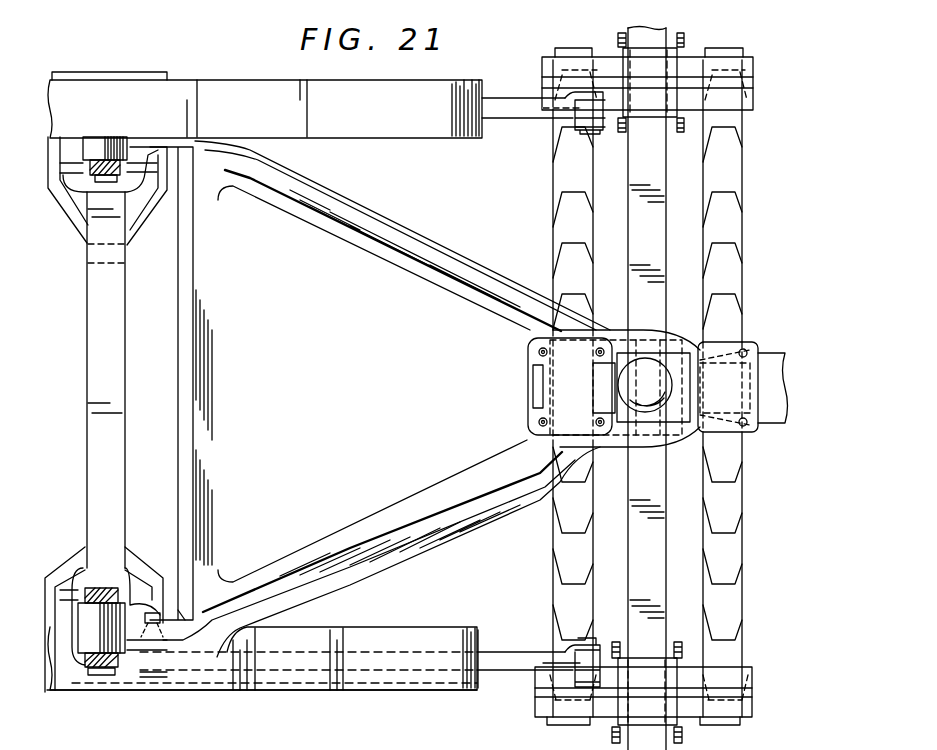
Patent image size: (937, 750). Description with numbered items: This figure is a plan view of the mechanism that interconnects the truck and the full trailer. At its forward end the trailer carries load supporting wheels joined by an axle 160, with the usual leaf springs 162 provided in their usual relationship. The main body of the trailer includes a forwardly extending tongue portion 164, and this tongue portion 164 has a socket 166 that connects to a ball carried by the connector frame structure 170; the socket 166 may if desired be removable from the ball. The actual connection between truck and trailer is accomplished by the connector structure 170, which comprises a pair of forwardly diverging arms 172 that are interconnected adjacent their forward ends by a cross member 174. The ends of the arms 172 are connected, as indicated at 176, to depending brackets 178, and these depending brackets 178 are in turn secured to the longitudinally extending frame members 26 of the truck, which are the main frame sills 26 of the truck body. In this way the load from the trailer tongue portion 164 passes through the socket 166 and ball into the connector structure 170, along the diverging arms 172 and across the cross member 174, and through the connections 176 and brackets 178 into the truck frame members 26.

The main frame sills 26 is at (458, 125).
The axle 160 is at (660, 295).
The leaf springs 162 is at (733, 547).
The tongue portion 164 is at (773, 360).
The socket 166 is at (642, 372).
The connector frame structure 170 is at (426, 481).
The forwardly diverging arms 172 is at (415, 265).
The cross member 174 is at (207, 505).
The connection 176 is at (105, 688).
The depending brackets 178 is at (168, 72).